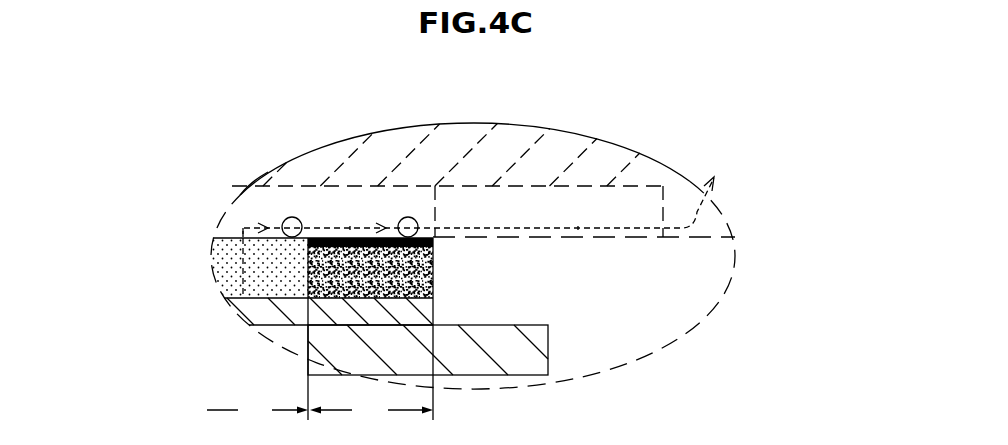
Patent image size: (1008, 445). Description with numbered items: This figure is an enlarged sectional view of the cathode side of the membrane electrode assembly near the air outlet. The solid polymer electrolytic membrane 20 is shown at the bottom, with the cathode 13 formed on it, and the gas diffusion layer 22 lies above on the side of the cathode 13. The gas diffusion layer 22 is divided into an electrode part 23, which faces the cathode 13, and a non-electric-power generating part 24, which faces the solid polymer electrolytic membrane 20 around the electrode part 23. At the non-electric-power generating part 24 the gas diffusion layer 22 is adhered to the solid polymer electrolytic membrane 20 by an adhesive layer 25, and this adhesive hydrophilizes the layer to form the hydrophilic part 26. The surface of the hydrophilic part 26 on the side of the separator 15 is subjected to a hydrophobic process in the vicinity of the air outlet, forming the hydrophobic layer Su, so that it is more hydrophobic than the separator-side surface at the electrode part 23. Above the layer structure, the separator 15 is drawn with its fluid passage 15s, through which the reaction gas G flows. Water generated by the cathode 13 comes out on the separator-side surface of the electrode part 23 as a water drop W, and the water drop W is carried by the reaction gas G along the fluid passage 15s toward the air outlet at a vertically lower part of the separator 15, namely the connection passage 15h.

The separator 15 is at (507, 152).
The fluid passage 15s is at (240, 194).
The connection passage 15h is at (630, 197).
The water drop W is at (294, 217).
The reaction gas G is at (350, 228).
The gas diffusion layer 22 is at (207, 238).
The hydrophobic layer Su is at (433, 252).
The hydrophilic part 26 is at (433, 279).
The adhesive layer 25 is at (433, 310).
The cathode 13 is at (258, 315).
The solid polymer electrolytic membrane 20 is at (533, 350).
The electrode part 23 is at (257, 332).
The non-electric-power generating part 24 is at (371, 332).